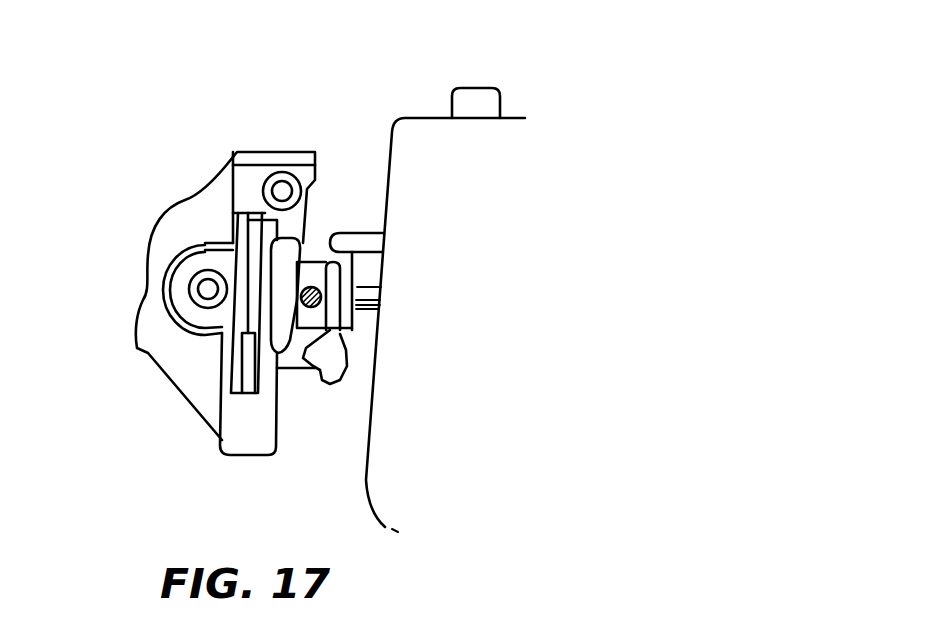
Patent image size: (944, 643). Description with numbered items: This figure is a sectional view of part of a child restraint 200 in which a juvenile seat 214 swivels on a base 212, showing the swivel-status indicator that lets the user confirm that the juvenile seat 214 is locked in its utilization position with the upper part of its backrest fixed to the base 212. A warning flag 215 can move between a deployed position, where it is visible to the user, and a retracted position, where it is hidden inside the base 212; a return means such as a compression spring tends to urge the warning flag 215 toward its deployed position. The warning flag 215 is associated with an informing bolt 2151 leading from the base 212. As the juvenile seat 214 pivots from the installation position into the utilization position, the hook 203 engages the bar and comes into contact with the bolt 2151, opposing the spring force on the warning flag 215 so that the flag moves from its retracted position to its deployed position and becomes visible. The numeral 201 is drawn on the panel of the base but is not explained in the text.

The child restraint 200 is at (214, 143).
The side panel 201 is at (513, 118).
The hook 203 is at (336, 338).
The base 212 is at (456, 295).
The juvenile seat 214 is at (159, 377).
The warning flag 215 is at (483, 86).
The informing bolt 2151 is at (350, 233).